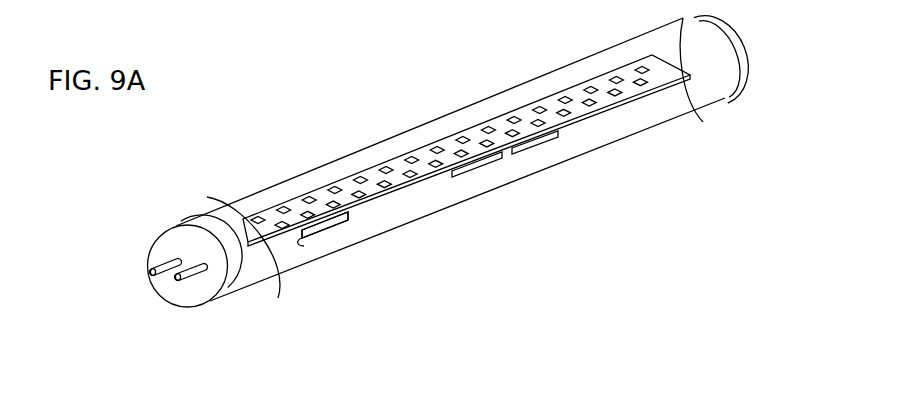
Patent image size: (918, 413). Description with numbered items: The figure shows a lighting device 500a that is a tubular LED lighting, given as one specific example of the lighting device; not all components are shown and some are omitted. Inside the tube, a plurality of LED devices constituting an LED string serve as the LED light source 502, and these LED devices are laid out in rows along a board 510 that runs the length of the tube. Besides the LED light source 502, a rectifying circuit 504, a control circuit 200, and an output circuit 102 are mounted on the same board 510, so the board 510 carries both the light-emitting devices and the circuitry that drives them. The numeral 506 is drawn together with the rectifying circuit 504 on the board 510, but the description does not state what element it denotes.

The lighting device 500a is at (472, 366).
The LED light source 502 is at (438, 143).
The board 510 is at (668, 88).
The output circuit 102 is at (548, 138).
The control circuit 200 is at (481, 167).
The rectifying circuit 504 is at (352, 229).
The fastener 506 is at (325, 225).